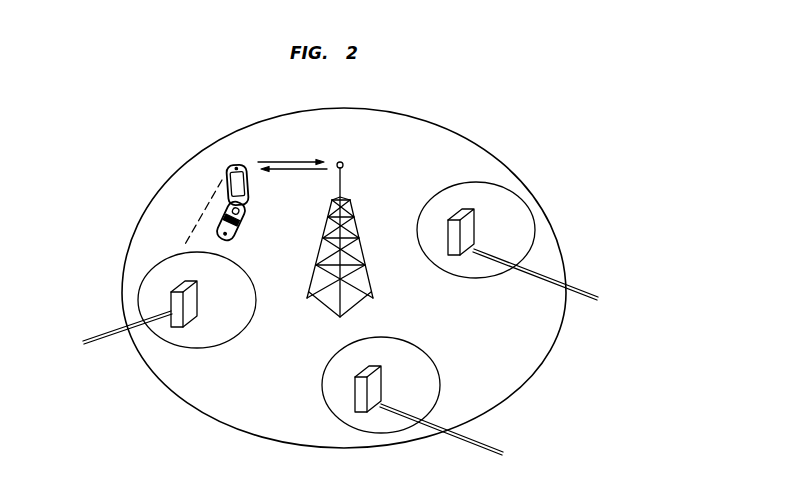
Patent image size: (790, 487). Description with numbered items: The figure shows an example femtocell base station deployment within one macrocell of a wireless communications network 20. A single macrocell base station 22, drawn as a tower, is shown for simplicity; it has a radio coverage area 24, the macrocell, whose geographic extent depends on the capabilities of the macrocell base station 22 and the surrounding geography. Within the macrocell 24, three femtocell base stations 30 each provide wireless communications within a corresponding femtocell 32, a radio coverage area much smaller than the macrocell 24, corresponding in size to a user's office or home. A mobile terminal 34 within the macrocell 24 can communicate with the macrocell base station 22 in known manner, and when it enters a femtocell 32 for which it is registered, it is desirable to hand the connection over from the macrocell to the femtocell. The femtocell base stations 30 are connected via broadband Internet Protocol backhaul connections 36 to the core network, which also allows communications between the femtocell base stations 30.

The communication system 20 is at (90, 163).
The macrocell base station 22 is at (363, 238).
The radio coverage area (macrocell) 24 is at (484, 143).
The femtocell base station 30 is at (200, 298).
The femtocell 32 is at (173, 257).
The mobile terminal 34 is at (243, 214).
The broadband Internet Protocol connection (backhaul) 36 is at (109, 333).